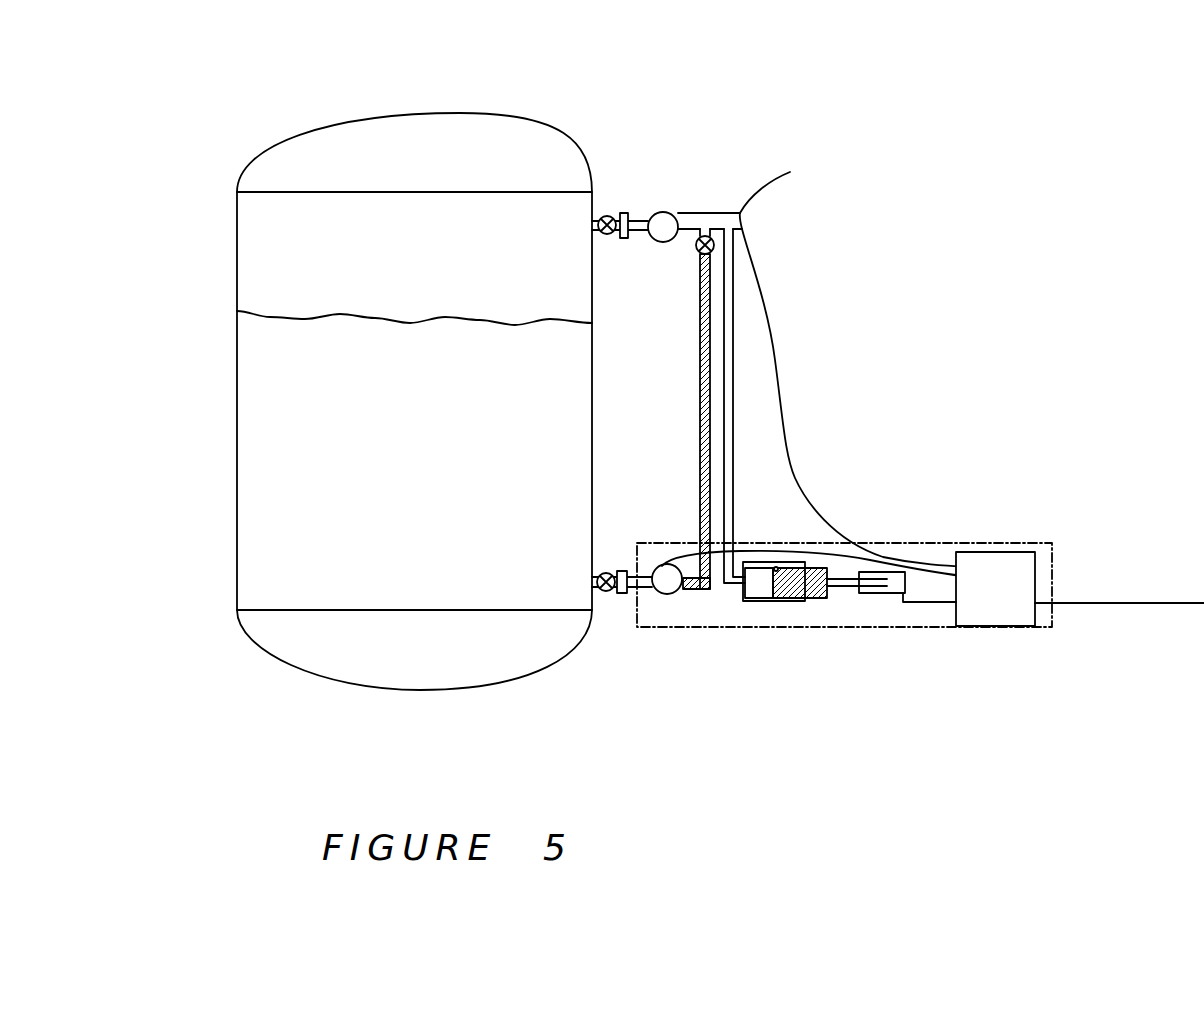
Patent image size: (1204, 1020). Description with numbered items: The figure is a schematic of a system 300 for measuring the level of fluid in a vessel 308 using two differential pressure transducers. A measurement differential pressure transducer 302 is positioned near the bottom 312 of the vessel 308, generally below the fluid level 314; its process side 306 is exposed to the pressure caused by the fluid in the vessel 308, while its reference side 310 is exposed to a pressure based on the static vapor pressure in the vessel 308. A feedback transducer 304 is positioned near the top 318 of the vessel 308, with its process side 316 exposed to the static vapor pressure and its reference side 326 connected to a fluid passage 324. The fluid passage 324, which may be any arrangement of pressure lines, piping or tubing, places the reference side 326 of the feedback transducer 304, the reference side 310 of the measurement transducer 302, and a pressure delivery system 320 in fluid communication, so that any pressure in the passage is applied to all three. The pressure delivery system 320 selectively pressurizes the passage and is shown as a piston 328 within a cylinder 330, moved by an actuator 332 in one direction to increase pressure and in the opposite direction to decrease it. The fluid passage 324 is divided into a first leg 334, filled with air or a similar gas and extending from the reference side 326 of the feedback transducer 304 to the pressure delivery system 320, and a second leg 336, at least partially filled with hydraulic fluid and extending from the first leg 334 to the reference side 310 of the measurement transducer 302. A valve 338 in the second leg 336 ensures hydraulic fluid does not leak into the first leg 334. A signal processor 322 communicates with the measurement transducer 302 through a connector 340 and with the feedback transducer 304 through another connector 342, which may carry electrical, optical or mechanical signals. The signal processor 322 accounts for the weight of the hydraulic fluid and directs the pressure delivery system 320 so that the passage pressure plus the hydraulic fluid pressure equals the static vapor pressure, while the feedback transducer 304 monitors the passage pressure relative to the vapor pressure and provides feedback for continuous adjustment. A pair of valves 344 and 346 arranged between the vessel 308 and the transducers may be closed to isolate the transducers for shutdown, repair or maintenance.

The system 300 is at (972, 198).
The measurement differential pressure transducer 302 is at (665, 600).
The feedback transducer 304 is at (665, 225).
The process side 306 is at (648, 588).
The vessel 308 is at (237, 381).
The reference side 310 is at (683, 594).
The bottom 312 is at (400, 692).
The fluid level 314 is at (237, 310).
The process side 316 is at (644, 221).
The top 318 is at (468, 115).
The pressure delivery system 320 is at (790, 546).
The signal processor 322 is at (1010, 567).
The fluid passage 324 is at (790, 172).
The reference side 326 is at (687, 242).
The piston 328 is at (812, 598).
The cylinder 330 is at (770, 599).
The actuator 332 is at (873, 591).
The first leg 334 is at (727, 358).
The second leg 336 is at (708, 463).
The valve 338 is at (711, 238).
The connector 340 is at (777, 566).
The connector 342 is at (800, 478).
The valve 344 is at (608, 572).
The valve 346 is at (608, 234).